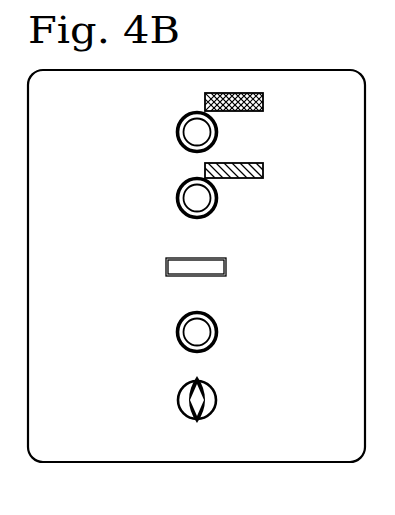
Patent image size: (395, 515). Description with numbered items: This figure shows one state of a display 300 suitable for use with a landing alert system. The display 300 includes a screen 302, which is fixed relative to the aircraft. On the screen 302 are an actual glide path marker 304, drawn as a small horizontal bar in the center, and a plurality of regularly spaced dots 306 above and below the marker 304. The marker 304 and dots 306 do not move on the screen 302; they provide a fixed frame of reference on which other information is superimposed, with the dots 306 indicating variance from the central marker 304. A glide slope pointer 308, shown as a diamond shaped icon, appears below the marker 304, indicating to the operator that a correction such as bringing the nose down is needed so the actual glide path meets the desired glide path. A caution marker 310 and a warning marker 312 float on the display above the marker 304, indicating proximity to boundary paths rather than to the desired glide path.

The display 300 is at (276, 56).
The screen 302 is at (300, 70).
The actual glide path marker 304 is at (166, 266).
The regularly spaced dots 306 is at (176, 131).
The glide slope pointer 308 is at (203, 406).
The caution marker 310 is at (263, 170).
The warning marker 312 is at (263, 100).